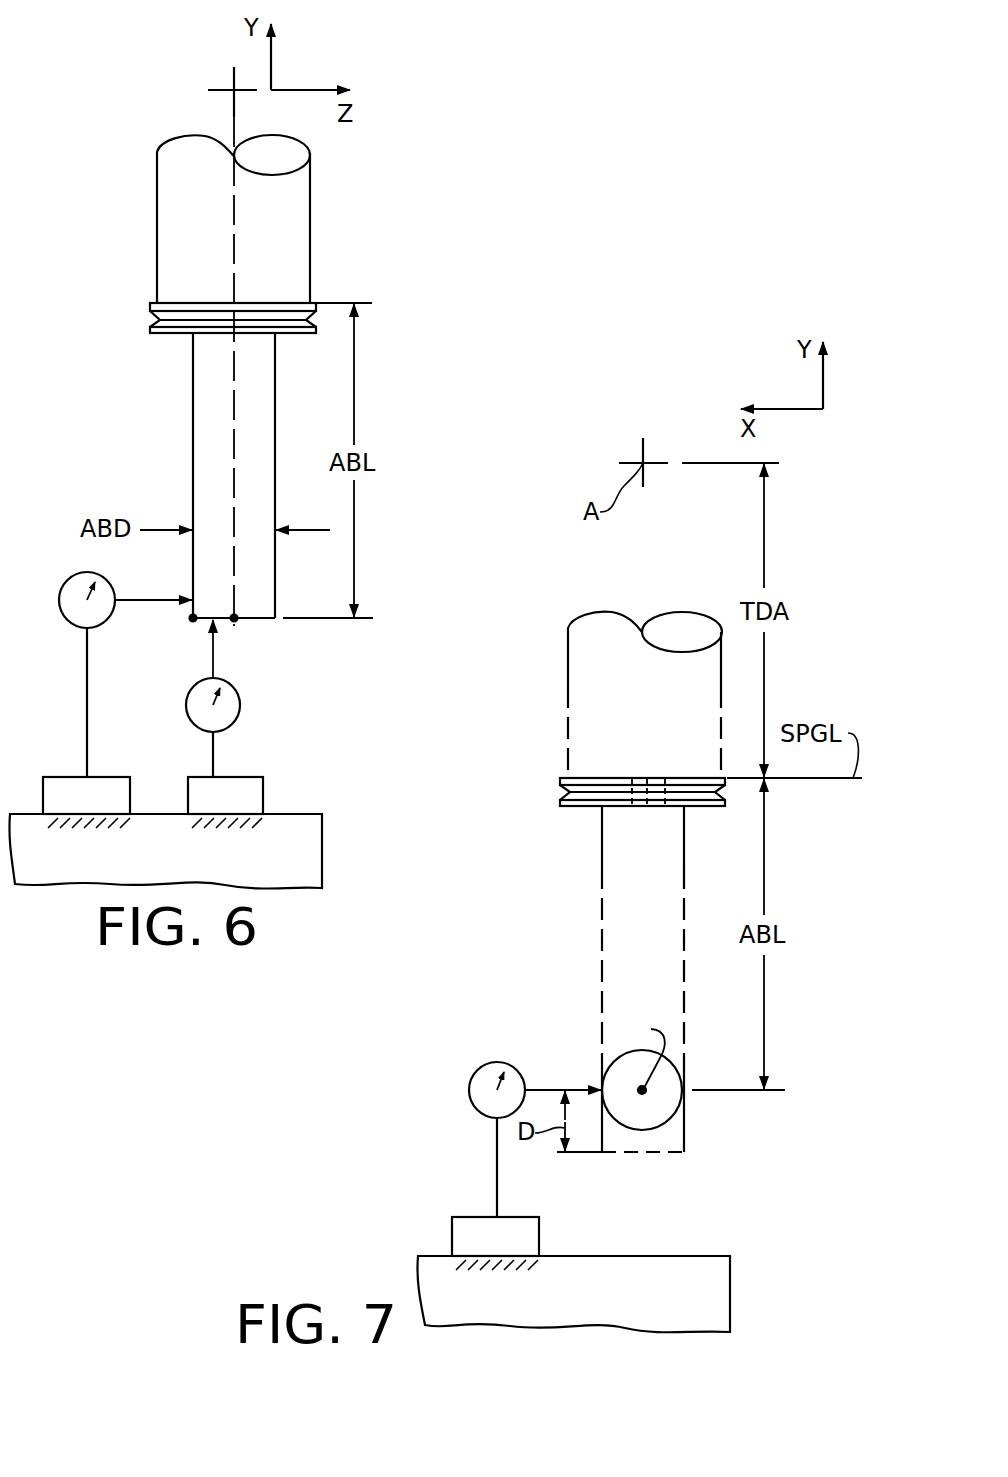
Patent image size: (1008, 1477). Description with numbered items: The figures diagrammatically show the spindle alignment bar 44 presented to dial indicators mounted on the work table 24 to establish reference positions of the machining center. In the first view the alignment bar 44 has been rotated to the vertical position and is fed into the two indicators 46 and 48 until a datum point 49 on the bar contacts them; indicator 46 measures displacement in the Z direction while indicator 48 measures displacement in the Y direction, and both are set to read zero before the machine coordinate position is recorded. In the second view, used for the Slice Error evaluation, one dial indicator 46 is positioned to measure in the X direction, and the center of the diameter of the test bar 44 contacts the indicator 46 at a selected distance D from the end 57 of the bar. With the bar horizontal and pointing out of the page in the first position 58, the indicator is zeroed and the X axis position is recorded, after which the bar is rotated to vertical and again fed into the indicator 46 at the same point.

In FIG. 6, the work table 24 is at (300, 814).
In FIG. 7, the work table 24 is at (672, 1256).
In FIG. 6, the spindle alignment bar 44 is at (193, 440).
In FIG. 7, the spindle alignment bar 44 is at (602, 851).
In FIG. 6, the dial indicator 46 is at (67, 621).
In FIG. 7, the dial indicator 46 is at (471, 1102).
In FIG. 6, the dial indicator 48 is at (241, 705).
In FIG. 6, the datum point 49 is at (192, 623).
In FIG. 7, the end of the test bar 57 is at (602, 1152).
In FIG. 7, the first position 58 is at (668, 1120).